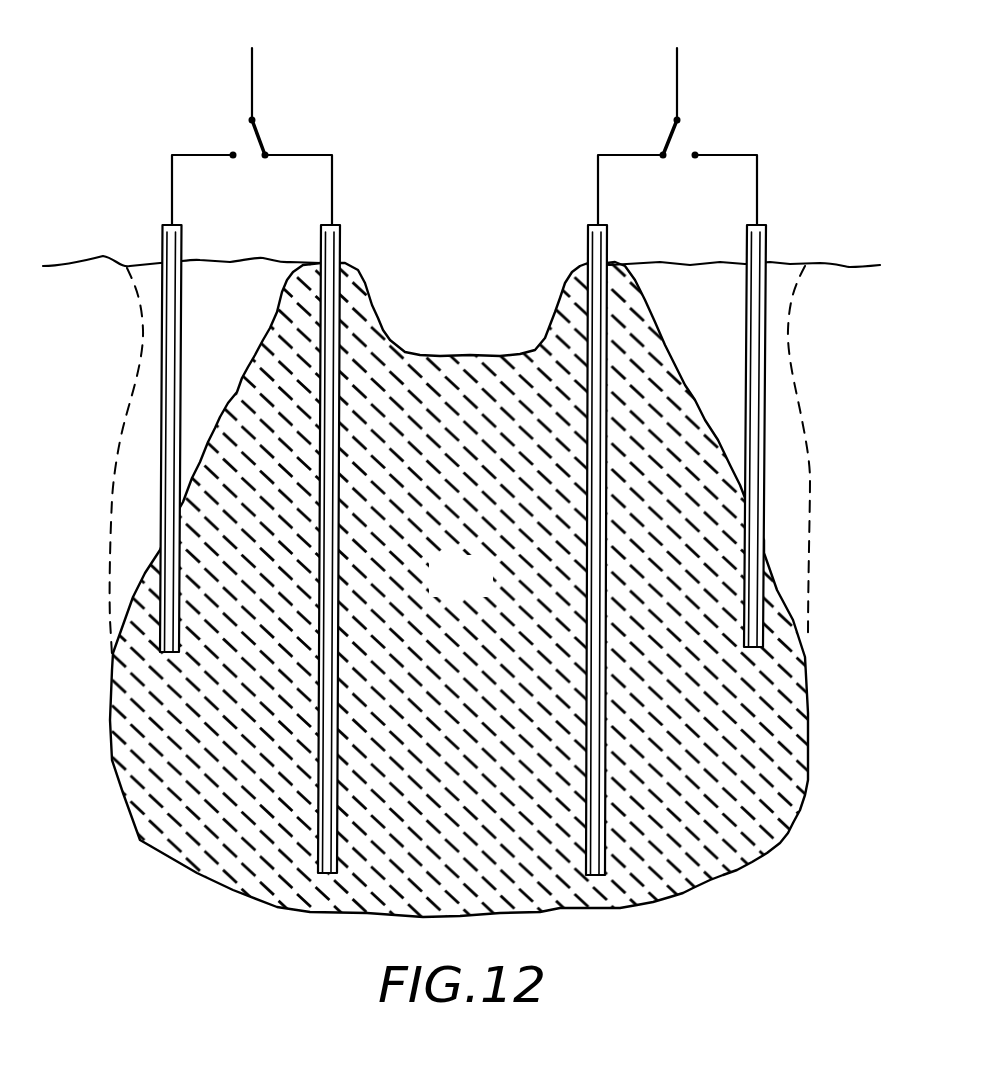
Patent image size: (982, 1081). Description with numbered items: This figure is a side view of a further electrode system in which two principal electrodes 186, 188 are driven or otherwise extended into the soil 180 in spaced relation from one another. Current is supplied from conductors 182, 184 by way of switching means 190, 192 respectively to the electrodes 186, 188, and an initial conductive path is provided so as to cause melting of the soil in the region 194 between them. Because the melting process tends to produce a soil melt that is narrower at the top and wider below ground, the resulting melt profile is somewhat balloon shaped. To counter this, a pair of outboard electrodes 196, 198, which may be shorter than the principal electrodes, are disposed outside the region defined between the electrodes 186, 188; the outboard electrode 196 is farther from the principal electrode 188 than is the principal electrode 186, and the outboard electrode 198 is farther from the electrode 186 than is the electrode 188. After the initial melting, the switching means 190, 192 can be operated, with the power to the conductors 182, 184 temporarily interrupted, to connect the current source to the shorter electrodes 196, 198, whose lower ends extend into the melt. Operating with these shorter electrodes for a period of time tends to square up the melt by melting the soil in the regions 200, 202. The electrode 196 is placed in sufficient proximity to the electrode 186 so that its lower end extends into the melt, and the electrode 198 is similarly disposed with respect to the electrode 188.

The soil 180 is at (786, 266).
The conductor 182 is at (252, 72).
The conductor 184 is at (677, 72).
The electrode 186 is at (342, 241).
The electrode 188 is at (588, 243).
The switching means 190 is at (262, 155).
The switching means 192 is at (668, 155).
The region 194 is at (488, 590).
The outboard electrode 196 is at (162, 345).
The outboard electrode 198 is at (766, 342).
The region 200 is at (145, 447).
The region 202 is at (782, 440).